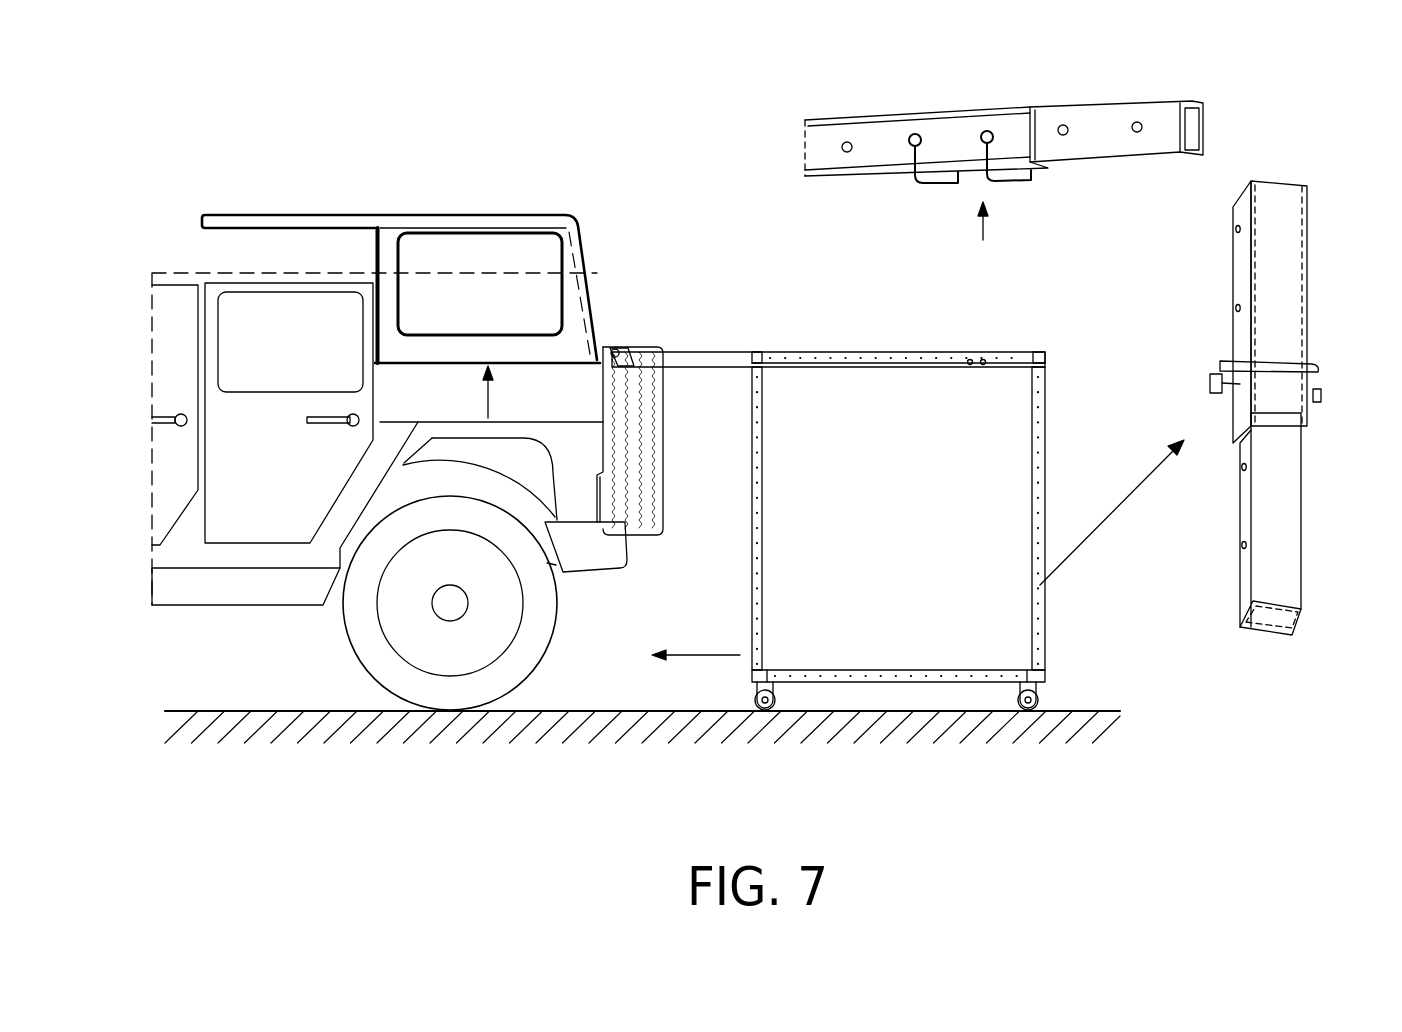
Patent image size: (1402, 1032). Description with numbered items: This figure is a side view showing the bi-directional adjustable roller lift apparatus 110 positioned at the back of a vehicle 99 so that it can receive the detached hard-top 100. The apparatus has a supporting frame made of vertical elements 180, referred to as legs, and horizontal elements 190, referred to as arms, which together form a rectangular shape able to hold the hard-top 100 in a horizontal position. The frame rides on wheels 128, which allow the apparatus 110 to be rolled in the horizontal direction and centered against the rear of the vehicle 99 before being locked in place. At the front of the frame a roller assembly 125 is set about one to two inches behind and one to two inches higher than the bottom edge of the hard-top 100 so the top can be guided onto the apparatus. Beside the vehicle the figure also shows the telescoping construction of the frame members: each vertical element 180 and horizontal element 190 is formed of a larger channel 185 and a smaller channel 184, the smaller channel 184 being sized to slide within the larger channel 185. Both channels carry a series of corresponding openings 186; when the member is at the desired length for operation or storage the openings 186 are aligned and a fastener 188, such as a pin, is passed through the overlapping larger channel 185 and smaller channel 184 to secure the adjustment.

The hard-top 100 is at (392, 223).
The vehicle 99 is at (533, 393).
The roller assembly 125 is at (616, 348).
The bi-directional adjustable roller lift apparatus 110 is at (762, 328).
The horizontal elements 190 is at (885, 355).
The vertical elements 180 is at (762, 507).
The wheels 128 is at (765, 712).
The larger channel 185 is at (880, 118).
The smaller channel 184 is at (1120, 140).
The openings 186 is at (844, 146).
The fastener 188 is at (910, 162).